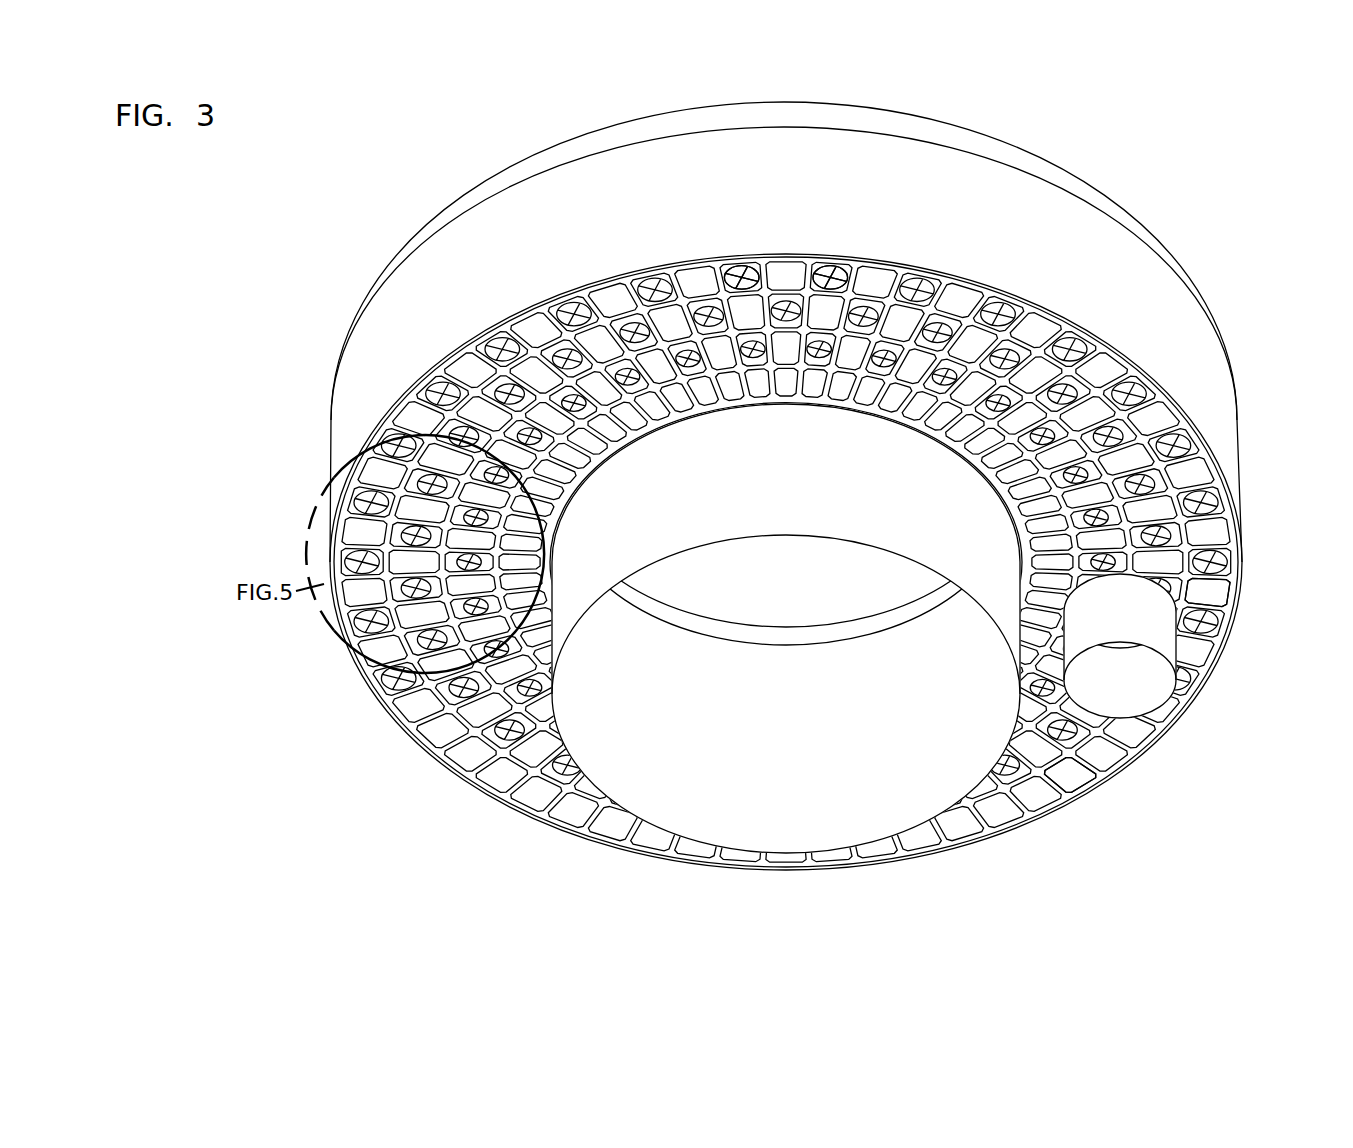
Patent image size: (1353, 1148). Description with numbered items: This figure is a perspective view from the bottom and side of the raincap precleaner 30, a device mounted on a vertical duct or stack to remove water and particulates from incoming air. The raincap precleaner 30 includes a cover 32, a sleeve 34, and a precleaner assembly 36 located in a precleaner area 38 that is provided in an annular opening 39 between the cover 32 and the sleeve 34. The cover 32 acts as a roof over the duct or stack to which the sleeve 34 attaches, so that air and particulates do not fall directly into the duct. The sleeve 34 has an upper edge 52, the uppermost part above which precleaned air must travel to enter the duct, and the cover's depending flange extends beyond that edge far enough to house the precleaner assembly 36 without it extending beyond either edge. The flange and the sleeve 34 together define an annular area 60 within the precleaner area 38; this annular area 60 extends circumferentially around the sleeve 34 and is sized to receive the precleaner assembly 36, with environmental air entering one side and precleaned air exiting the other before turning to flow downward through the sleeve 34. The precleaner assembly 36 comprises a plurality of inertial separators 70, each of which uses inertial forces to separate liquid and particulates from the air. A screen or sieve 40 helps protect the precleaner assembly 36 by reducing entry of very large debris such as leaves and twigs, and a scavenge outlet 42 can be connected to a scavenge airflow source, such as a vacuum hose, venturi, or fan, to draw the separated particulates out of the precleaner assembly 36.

The raincap precleaner 30 is at (422, 164).
The cover 32 is at (1050, 176).
The sleeve 34 is at (792, 488).
The precleaner assembly 36 is at (827, 534).
The precleaner area 38 is at (1060, 846).
The annular opening 39 is at (558, 858).
The screen or sieve 40 is at (1222, 578).
The scavenge outlet 42 is at (1150, 632).
The upper edge 52 is at (752, 626).
The annular area 60 is at (418, 798).
The inertial separator 70 is at (742, 270).